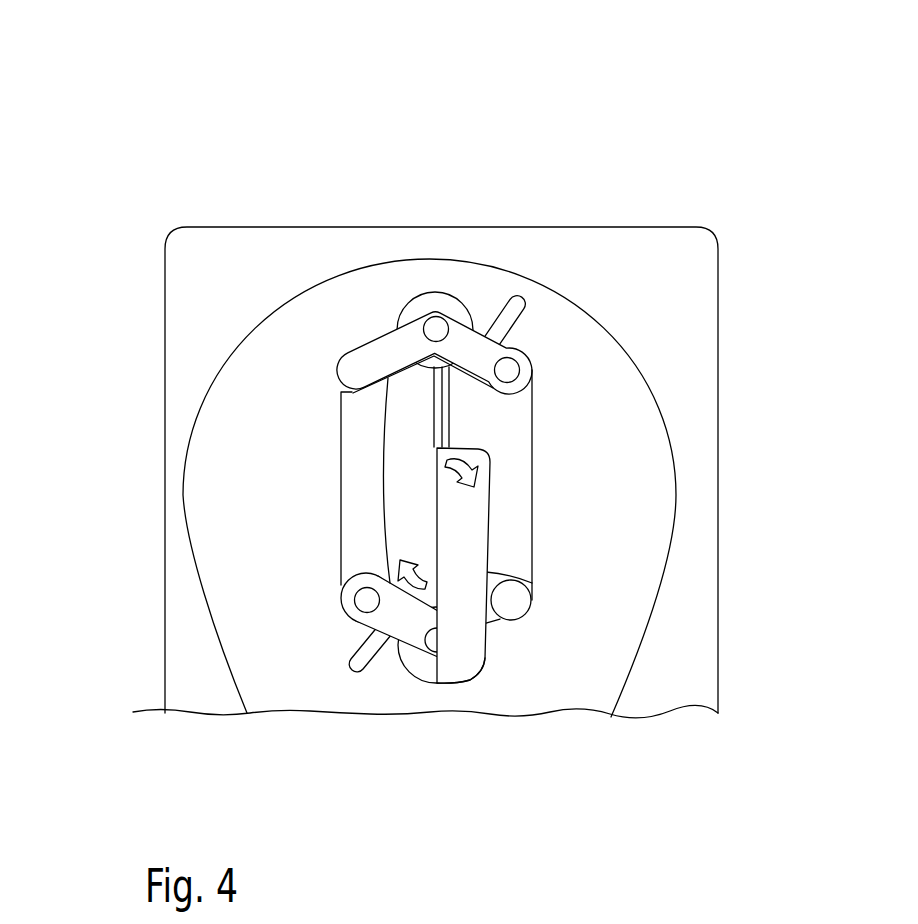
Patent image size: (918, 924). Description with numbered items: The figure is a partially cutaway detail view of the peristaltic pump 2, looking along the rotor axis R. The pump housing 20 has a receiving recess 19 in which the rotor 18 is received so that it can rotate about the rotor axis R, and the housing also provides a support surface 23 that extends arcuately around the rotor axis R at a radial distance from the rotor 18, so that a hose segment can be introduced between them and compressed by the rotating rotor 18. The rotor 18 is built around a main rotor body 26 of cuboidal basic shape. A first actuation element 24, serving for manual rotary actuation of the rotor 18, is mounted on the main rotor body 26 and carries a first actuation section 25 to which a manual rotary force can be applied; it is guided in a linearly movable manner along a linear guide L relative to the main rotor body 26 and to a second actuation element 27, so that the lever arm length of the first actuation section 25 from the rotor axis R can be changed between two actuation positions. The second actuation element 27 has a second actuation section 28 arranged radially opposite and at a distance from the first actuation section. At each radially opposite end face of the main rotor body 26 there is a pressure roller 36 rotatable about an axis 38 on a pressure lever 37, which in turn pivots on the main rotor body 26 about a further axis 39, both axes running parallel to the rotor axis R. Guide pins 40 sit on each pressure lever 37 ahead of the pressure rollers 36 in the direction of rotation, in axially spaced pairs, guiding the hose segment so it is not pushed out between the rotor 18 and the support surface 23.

The peristaltic pump 2 is at (436, 418).
The rotor 18 is at (309, 316).
The receiving recess 19 is at (567, 679).
The pump housing 20 is at (674, 248).
The support surface 23 is at (650, 398).
The first actuation element 24 is at (512, 530).
The first actuation section 25 is at (487, 666).
The main rotor body 26 is at (533, 483).
The second actuation element 27 is at (360, 530).
The second actuation section 28 is at (385, 430).
The pressure roller 36 is at (447, 294).
The pressure lever 37 is at (338, 370).
The axis 38 is at (427, 320).
The further axis 39 is at (520, 369).
The guide pins 40 is at (523, 297).
The linear guide L is at (502, 425).
The rotor axis R is at (425, 490).